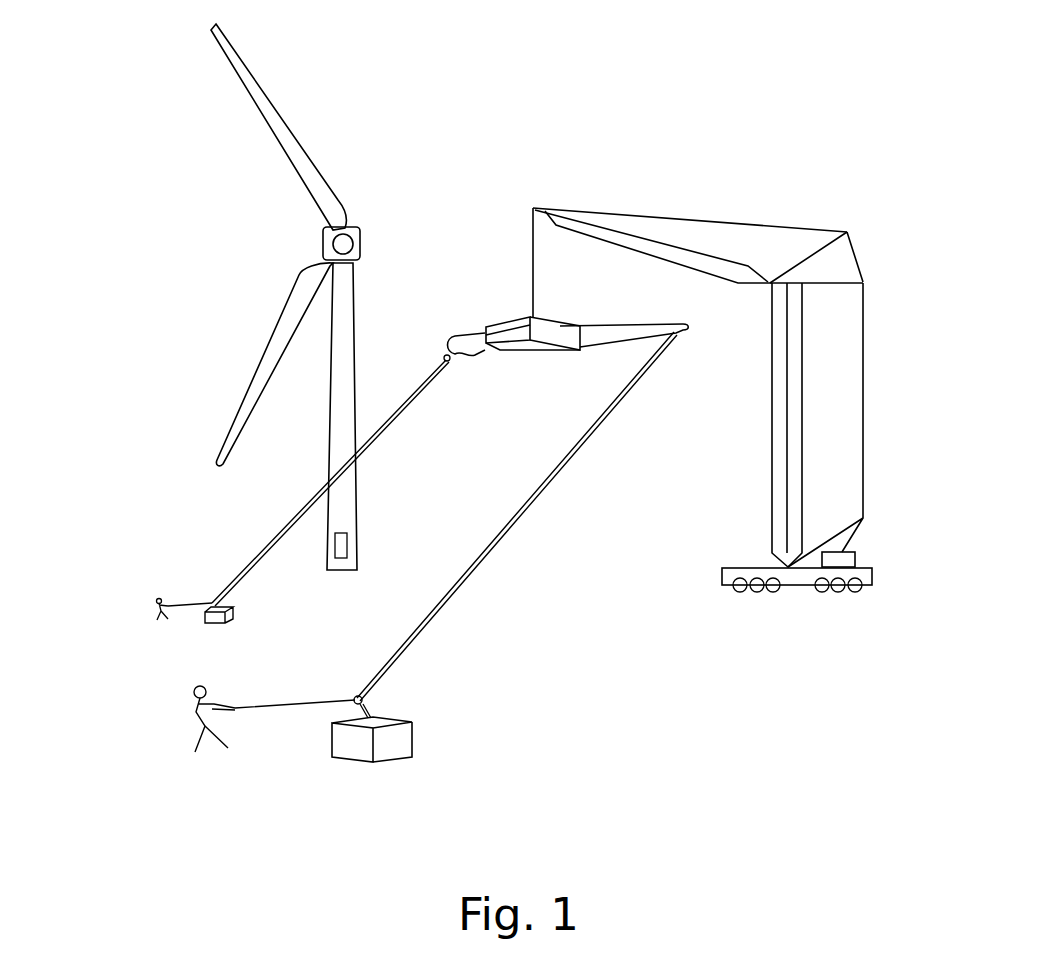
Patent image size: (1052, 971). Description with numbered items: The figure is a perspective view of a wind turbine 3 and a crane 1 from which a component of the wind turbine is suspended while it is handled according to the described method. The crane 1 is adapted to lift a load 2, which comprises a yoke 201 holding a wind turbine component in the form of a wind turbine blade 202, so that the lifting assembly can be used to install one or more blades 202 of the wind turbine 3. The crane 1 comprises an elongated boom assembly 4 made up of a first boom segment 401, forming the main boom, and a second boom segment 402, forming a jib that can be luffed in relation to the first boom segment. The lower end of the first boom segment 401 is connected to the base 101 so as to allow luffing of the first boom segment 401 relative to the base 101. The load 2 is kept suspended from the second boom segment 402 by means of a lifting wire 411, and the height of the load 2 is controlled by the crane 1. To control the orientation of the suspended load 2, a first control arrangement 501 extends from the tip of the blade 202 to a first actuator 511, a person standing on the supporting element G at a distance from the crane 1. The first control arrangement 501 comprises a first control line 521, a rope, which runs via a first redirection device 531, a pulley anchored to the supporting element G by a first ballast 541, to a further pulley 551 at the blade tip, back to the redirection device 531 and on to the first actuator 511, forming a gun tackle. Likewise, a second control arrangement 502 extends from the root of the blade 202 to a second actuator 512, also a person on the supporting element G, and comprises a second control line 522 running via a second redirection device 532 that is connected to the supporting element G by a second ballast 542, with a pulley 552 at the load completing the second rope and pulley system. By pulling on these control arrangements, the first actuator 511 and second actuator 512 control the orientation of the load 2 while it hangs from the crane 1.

The crane 1 is at (683, 387).
The load 2 is at (510, 354).
The wind turbine 3 is at (362, 186).
The boom assembly 4 is at (683, 421).
The base 101 is at (722, 580).
The yoke 201 is at (512, 357).
The wind turbine blade 202 is at (275, 110).
The first boom segment 401 is at (802, 423).
The second boom segment 402 is at (703, 273).
The lifting wire 411 is at (533, 245).
The first control arrangement 501 is at (425, 560).
The second control arrangement 502 is at (249, 472).
The first actuator 511 is at (195, 720).
The second actuator 512 is at (157, 605).
The first control line 521 is at (568, 470).
The second control line 522 is at (390, 420).
The first redirection device 531 is at (357, 694).
The second redirection device 532 is at (214, 602).
The first ballast 541 is at (400, 745).
The second ballast 542 is at (235, 616).
The further pulley 551 is at (678, 334).
The pulley 552 is at (446, 355).
The supporting element G is at (649, 768).